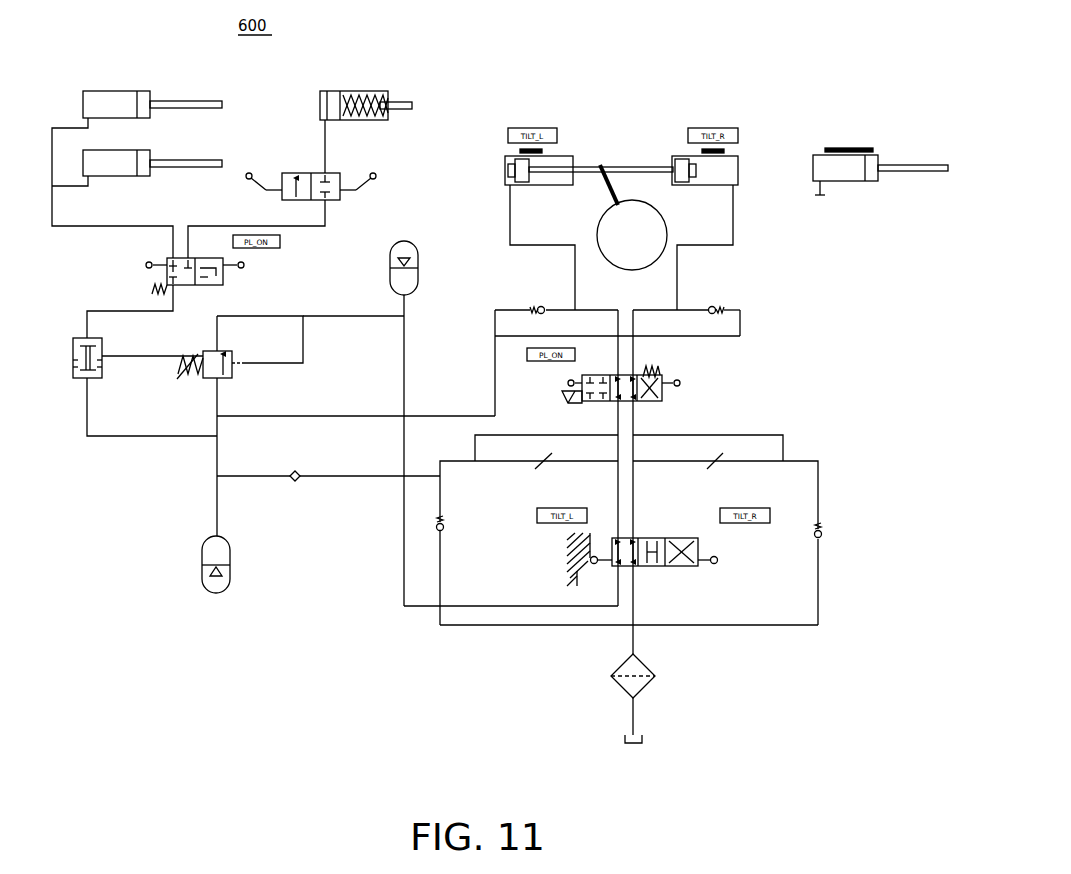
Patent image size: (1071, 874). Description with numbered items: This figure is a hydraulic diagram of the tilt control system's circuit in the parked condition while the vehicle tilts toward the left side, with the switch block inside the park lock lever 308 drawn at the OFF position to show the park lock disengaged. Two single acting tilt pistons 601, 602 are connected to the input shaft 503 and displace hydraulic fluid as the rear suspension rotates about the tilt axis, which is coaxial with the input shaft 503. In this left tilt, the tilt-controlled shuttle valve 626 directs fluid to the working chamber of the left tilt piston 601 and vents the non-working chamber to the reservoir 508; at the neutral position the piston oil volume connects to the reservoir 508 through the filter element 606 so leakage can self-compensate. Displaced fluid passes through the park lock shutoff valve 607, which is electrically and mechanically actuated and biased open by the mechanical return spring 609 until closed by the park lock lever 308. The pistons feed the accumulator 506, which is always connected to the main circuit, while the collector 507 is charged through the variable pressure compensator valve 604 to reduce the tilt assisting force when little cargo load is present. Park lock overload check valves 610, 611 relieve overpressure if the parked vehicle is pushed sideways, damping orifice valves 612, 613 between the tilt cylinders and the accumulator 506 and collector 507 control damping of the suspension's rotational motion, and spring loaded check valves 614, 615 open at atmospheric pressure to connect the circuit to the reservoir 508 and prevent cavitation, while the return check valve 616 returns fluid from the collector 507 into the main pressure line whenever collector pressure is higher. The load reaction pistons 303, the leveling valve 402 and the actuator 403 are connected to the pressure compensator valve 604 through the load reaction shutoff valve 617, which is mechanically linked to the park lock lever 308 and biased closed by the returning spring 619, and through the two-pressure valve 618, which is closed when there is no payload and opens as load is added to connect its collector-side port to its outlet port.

The load reaction piston 303 is at (118, 92).
The actuator 403 is at (345, 93).
The leveling valve 402 is at (283, 176).
The load reaction shutoff valve 617 is at (220, 288).
The returning spring 619 is at (152, 285).
The two-pressure valve 618 is at (73, 355).
The variable pressure compensator valve 604 is at (203, 378).
The accumulator 506 is at (418, 256).
The collector 507 is at (193, 580).
The tilt piston 601 is at (507, 157).
The tilt piston 602 is at (738, 157).
The input shaft 503 is at (632, 217).
The park lock lever 308 is at (873, 150).
The park lock overload check valve 610 is at (533, 310).
The park lock overload check valve 611 is at (720, 307).
The mechanical return spring 609 is at (658, 372).
The park lock shutoff valve 607 is at (662, 402).
The damping orifice valve 612 is at (535, 455).
The damping orifice valve 613 is at (705, 453).
The spring loaded check valve 614 is at (441, 531).
The spring loaded check valve 615 is at (820, 538).
The return check valve 616 is at (297, 482).
The tilt-controlled shuttle valve 626 is at (665, 570).
The filter element 606 is at (610, 678).
The reservoir 508 is at (625, 740).